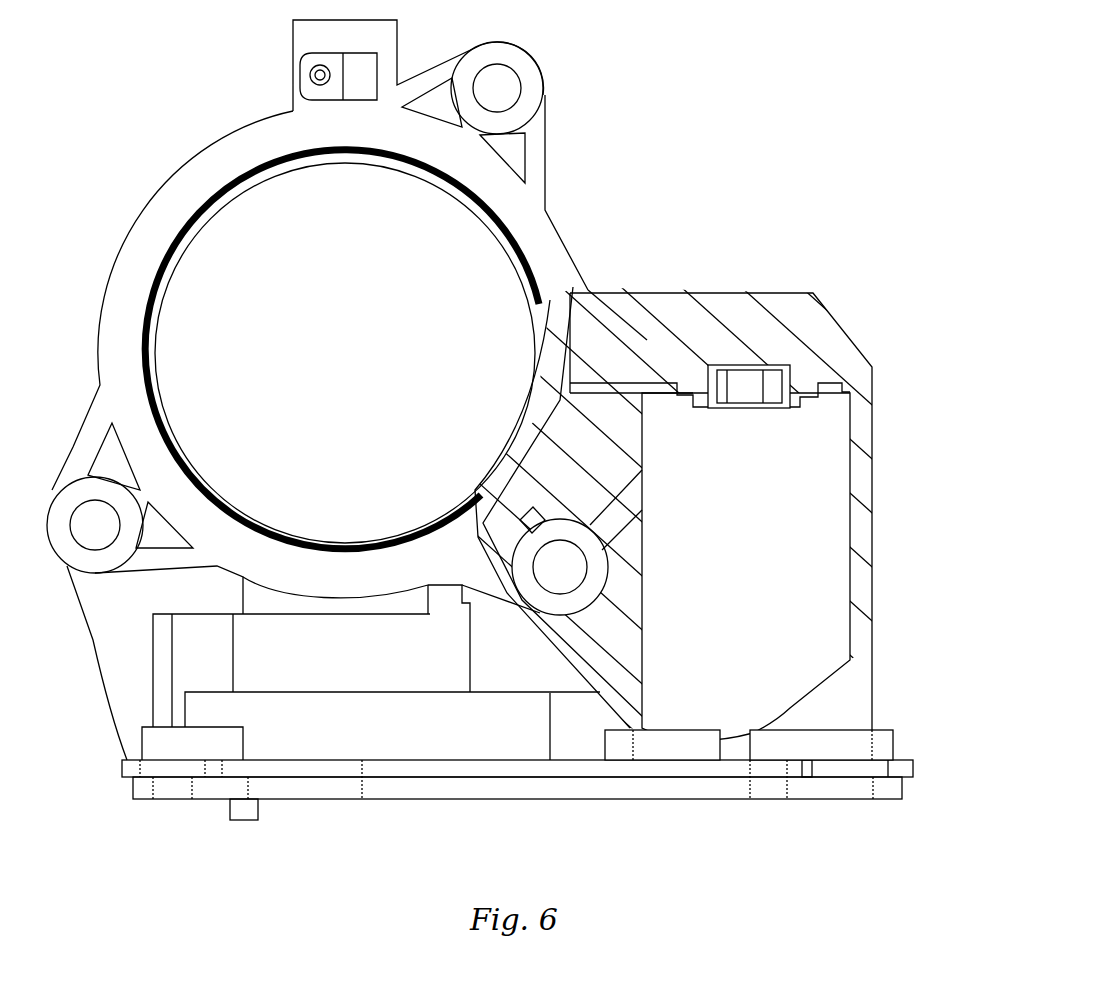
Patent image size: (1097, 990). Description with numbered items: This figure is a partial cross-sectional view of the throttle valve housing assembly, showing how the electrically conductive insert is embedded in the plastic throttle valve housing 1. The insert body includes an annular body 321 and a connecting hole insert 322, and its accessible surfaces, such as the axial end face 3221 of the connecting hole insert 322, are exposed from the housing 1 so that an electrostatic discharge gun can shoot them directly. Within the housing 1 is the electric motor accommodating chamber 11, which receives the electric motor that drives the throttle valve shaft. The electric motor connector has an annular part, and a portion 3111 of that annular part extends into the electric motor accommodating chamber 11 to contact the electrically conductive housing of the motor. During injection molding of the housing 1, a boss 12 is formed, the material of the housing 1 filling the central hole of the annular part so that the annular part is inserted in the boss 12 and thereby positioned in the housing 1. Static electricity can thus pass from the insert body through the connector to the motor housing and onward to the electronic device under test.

The throttle valve housing 1 is at (218, 158).
The axial end face of connecting hole insert 3221 is at (525, 75).
The annular body 321 is at (542, 342).
The portion of the annular part 3111 is at (655, 392).
The boss 12 is at (800, 392).
The electric motor accommodating chamber 11 is at (805, 547).
The connecting hole insert 322 is at (590, 585).